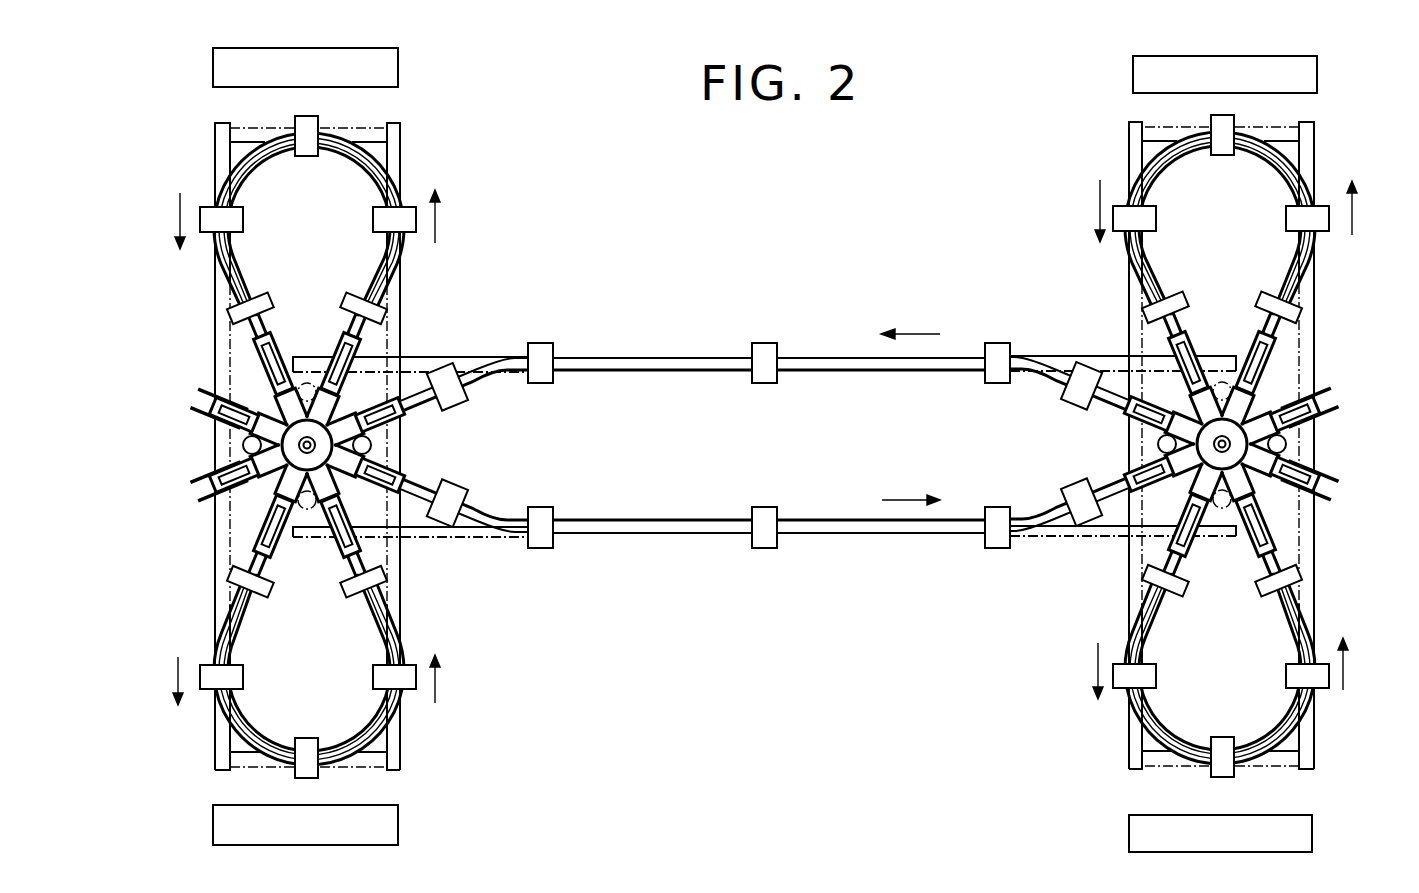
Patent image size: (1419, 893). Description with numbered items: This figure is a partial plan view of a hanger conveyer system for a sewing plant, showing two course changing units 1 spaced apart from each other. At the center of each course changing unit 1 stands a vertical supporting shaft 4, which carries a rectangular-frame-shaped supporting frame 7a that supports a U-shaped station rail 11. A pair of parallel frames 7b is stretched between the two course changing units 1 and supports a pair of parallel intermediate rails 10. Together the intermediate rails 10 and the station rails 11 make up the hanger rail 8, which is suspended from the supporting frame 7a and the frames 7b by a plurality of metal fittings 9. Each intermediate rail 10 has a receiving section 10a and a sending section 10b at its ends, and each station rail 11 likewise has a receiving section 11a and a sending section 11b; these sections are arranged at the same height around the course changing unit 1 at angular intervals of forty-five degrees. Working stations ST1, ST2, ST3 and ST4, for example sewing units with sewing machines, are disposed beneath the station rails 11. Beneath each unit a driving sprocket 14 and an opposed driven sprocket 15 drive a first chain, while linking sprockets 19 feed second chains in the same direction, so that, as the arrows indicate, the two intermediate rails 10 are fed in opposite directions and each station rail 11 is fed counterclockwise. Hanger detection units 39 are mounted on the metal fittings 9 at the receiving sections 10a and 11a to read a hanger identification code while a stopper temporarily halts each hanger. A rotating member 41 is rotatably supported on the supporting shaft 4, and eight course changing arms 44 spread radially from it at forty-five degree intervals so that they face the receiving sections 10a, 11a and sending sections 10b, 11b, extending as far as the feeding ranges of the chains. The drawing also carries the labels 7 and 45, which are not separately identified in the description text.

The course changing unit 1 is at (232, 366).
The supporting shaft 4 is at (309, 443).
The endless track 7 is at (295, 600).
The supporting frame 7a is at (222, 155).
The frame 7b is at (482, 358).
The hanger rail 8 is at (639, 356).
The metal fitting 9 is at (309, 157).
The intermediate rail 10 is at (718, 357).
The receiving section 10a is at (451, 405).
The sending section 10b is at (448, 492).
The station rail 11 is at (256, 131).
The receiving section 11a is at (274, 320).
The sending section 11b is at (325, 294).
The driving sprocket 14 is at (370, 446).
The driven sprocket 15 is at (246, 442).
The linking sprocket 19 is at (278, 391).
The hanger detection unit 39 is at (230, 308).
The rotating member 41 is at (280, 470).
The course changing arm 44 is at (211, 403).
The lower guide rails 45 is at (212, 492).
The working station ST1 is at (400, 58).
The working station ST2 is at (398, 824).
The working station ST3 is at (1133, 68).
The working station ST4 is at (1128, 820).